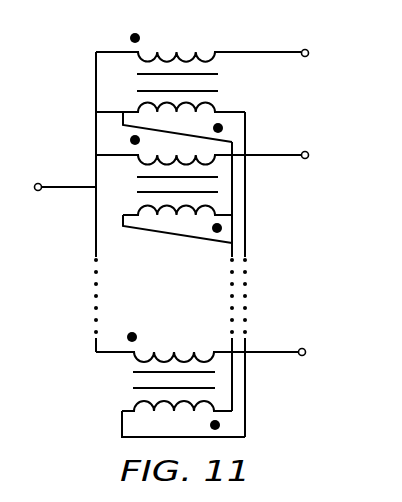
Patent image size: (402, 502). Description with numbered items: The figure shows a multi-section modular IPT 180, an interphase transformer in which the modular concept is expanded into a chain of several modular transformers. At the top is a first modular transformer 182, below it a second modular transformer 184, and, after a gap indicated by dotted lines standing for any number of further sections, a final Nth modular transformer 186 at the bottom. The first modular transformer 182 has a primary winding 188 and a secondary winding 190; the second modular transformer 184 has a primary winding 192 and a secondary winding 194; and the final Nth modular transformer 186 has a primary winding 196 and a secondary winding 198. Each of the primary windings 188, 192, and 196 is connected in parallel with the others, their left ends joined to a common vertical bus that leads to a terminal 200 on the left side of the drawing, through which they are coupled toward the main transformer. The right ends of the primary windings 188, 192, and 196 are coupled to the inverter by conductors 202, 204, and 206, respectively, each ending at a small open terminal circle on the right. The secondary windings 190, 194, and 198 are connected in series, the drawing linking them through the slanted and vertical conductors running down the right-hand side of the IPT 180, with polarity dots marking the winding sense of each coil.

The multi-section modular IPT 180 is at (322, 105).
The first modular transformer 182 is at (226, 83).
The second modular transformer 184 is at (125, 188).
The final Nth modular transformer 186 is at (124, 377).
The primary winding 188 is at (178, 56).
The secondary winding 190 is at (217, 108).
The primary winding 192 is at (215, 160).
The secondary winding 194 is at (216, 208).
The primary winding 196 is at (156, 350).
The secondary winding 198 is at (136, 405).
The input terminal 200 is at (70, 185).
The conductor 202 is at (280, 53).
The conductor 204 is at (260, 155).
The conductor 206 is at (262, 355).